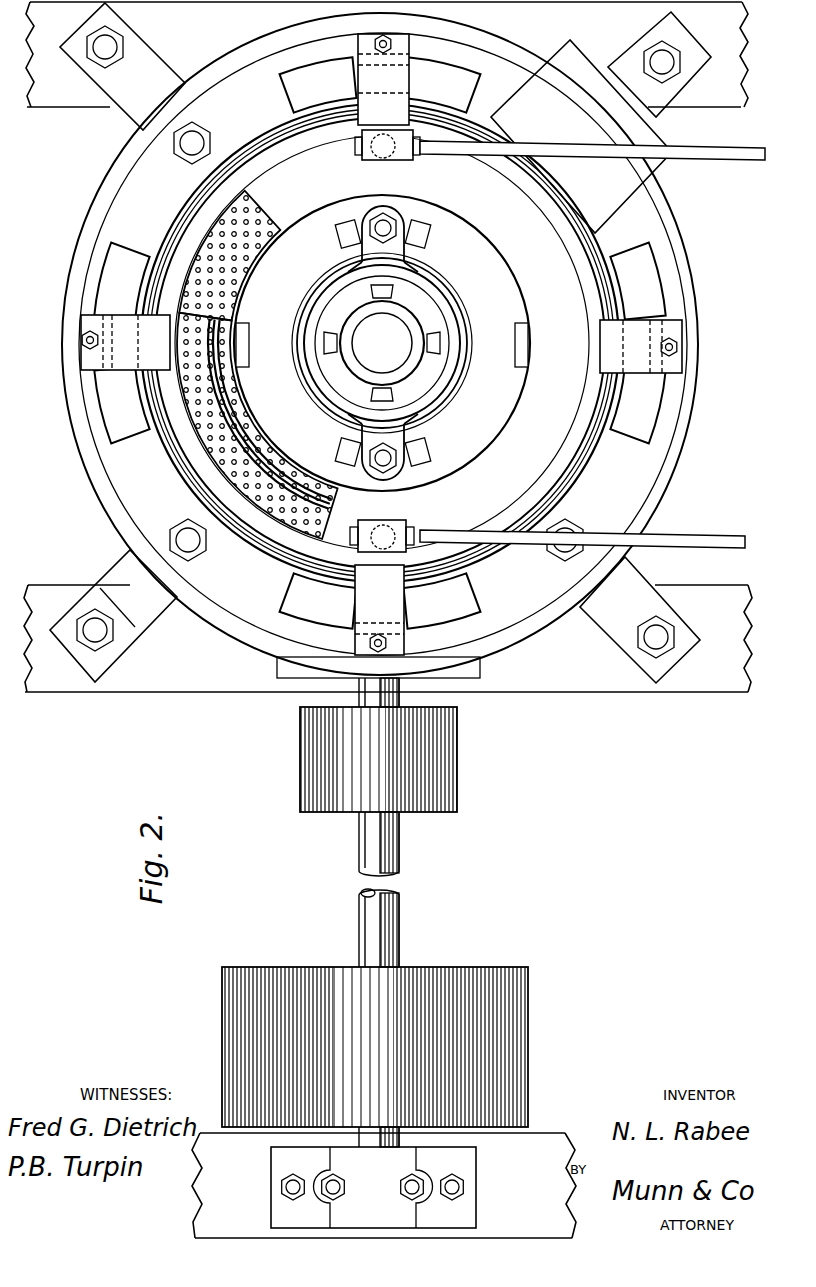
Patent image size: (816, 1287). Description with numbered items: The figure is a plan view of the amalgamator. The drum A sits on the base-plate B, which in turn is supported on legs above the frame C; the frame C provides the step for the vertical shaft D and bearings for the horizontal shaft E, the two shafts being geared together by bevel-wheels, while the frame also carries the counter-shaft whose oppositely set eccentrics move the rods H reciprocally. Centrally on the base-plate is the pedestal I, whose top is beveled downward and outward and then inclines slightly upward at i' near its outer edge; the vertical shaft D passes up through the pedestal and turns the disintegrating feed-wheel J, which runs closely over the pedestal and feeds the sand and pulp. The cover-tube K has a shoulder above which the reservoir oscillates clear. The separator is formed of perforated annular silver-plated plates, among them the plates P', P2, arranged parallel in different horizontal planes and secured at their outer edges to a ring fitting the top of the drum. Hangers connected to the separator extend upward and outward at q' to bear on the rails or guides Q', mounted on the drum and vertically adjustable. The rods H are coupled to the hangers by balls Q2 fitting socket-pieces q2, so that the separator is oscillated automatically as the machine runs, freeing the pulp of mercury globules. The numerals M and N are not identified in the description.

The drum A is at (173, 456).
The base-plate B is at (385, 1185).
The frame C is at (380, 615).
The vertical shaft D is at (382, 343).
The horizontal shaft E is at (368, 912).
The rods H is at (592, 344).
The pedestal I is at (443, 303).
The disintegrating feed-wheel J is at (426, 384).
The cover-tube K is at (459, 397).
The ring M is at (426, 333).
The spider arm N is at (382, 343).
The perforated annular plate P' is at (250, 363).
The perforated annular plate P2 is at (228, 192).
The rails or guides Q' is at (379, 342).
The balls Q2 is at (385, 150).
The outward bearing portion of hanger q' is at (381, 344).
The socket-pieces q2 is at (420, 524).
The upwardly inclined edge portion of pedestal i' is at (430, 191).